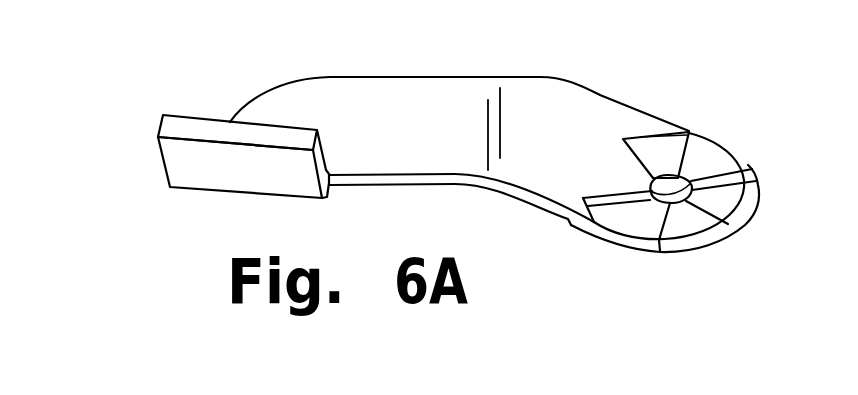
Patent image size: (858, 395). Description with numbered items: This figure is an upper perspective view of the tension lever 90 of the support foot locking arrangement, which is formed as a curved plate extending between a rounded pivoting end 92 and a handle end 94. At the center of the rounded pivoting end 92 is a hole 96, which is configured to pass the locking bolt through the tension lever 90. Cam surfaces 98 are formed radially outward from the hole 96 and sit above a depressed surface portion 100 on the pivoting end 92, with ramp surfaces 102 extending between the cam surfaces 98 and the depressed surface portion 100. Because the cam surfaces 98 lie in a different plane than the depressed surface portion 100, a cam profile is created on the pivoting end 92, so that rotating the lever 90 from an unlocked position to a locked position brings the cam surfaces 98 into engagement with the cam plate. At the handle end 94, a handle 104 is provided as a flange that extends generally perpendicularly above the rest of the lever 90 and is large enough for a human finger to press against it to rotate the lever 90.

The tension lever 90 is at (772, 75).
The pivoting end 92 is at (746, 223).
The handle end 94 is at (172, 172).
The hole 96 is at (737, 163).
The cam surfaces 98 is at (627, 175).
The depressed surface portion 100 is at (697, 157).
The ramp surfaces 102 is at (648, 152).
The handle 104 is at (190, 123).